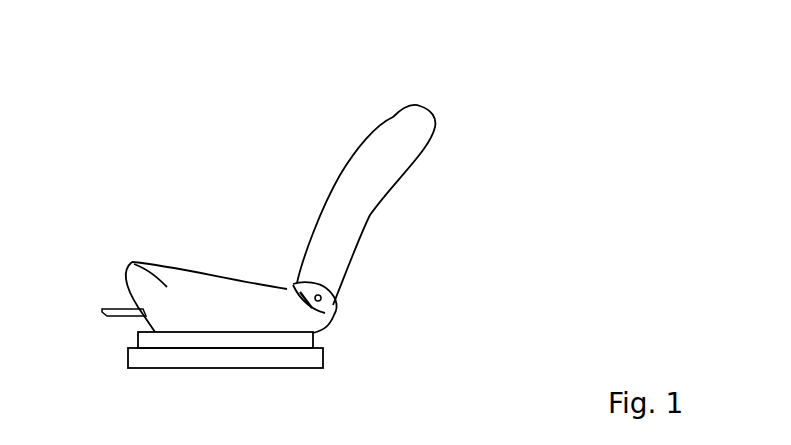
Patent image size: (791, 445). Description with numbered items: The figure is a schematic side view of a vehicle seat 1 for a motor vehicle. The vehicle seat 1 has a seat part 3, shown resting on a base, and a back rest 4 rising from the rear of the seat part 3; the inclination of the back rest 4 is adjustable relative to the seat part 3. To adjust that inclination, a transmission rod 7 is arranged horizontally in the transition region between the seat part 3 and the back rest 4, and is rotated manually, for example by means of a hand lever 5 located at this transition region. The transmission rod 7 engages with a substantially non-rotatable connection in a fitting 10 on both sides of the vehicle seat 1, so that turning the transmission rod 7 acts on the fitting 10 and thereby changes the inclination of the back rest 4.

The vehicle seat 1 is at (116, 83).
The seat part 3 is at (132, 260).
The back rest 4 is at (380, 171).
The hand lever 5 is at (300, 287).
The transmission rod 7 is at (319, 301).
The fitting 10 is at (345, 313).